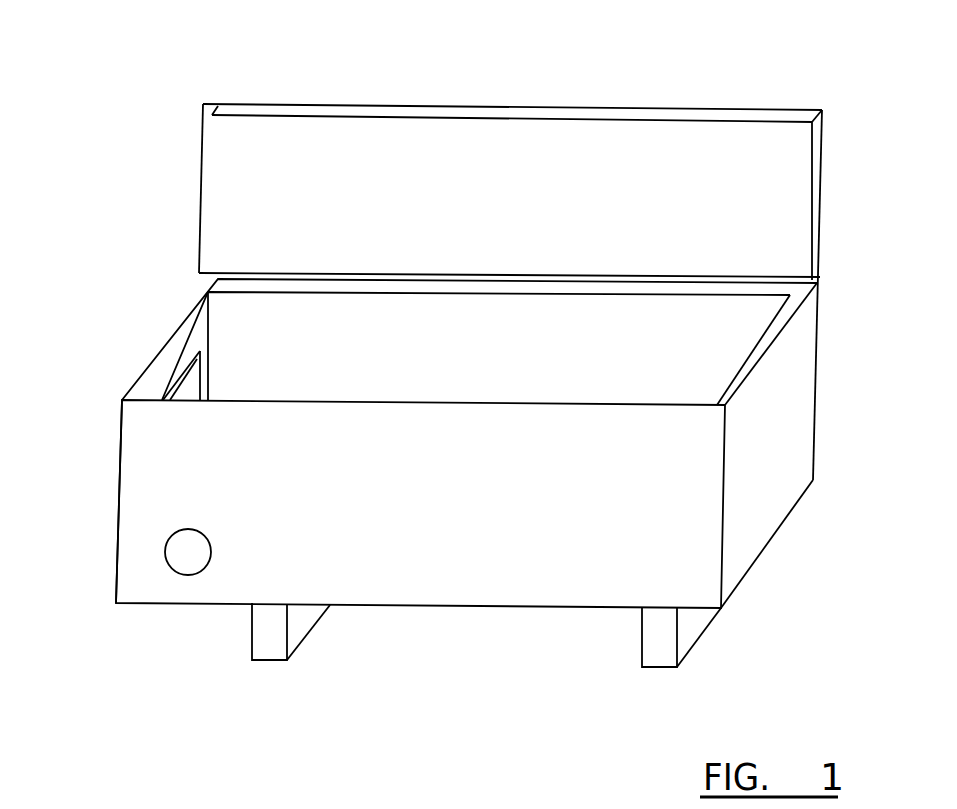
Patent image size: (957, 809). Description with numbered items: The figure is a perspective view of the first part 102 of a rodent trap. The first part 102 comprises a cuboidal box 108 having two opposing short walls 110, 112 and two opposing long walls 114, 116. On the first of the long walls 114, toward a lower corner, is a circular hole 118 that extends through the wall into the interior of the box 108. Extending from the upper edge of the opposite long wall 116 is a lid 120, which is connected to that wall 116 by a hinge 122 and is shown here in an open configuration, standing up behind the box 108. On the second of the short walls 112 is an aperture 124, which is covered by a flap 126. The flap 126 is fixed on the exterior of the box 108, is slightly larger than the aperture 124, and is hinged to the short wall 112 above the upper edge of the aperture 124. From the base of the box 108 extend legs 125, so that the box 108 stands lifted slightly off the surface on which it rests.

The first part 102 is at (826, 178).
The cuboidal box 108 is at (444, 360).
The short wall 110 is at (790, 461).
The short wall 112 is at (163, 342).
The long wall 114 is at (435, 515).
The long wall 116 is at (554, 360).
The circular hole 118 is at (188, 560).
The lid 120 is at (524, 201).
The hinge 122 is at (700, 277).
The aperture 124 is at (193, 385).
The legs 125 is at (663, 650).
The flap 126 is at (118, 456).